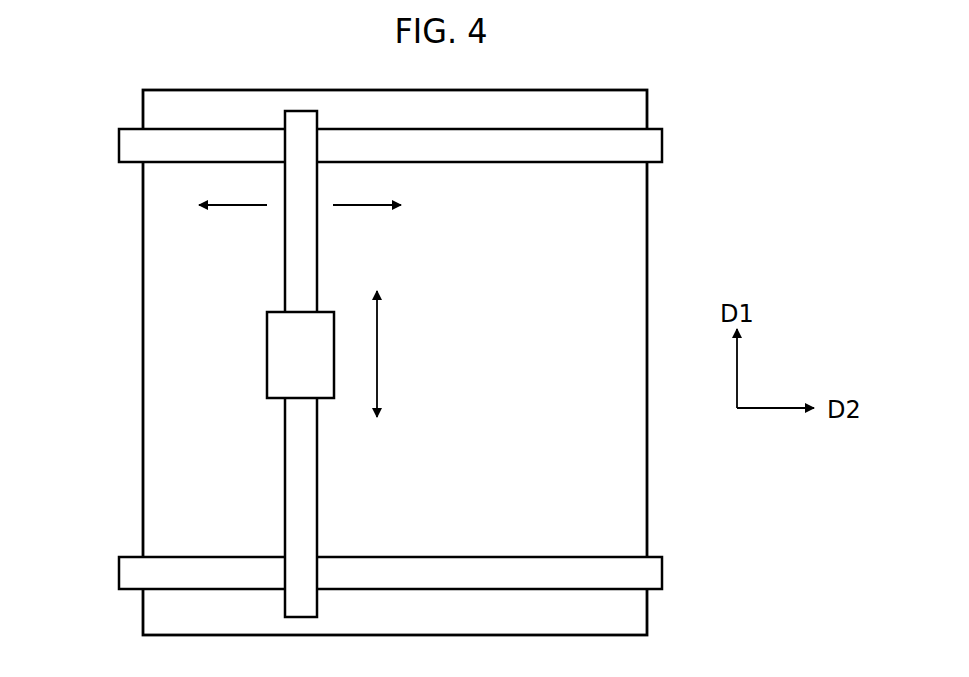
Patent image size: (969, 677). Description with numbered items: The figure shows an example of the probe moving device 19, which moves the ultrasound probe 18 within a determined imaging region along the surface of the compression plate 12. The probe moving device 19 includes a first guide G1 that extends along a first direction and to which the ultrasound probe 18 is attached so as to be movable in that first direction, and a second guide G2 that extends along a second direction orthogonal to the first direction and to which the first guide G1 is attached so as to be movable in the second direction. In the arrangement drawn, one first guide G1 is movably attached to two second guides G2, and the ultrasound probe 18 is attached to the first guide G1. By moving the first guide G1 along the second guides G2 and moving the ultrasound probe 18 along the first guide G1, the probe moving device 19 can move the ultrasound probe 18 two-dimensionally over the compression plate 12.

The compression plate 12 is at (205, 452).
The ultrasound probe 18 is at (303, 362).
The probe moving device 19 is at (633, 148).
The first guide G1 is at (303, 271).
The second guide G2 is at (138, 145).